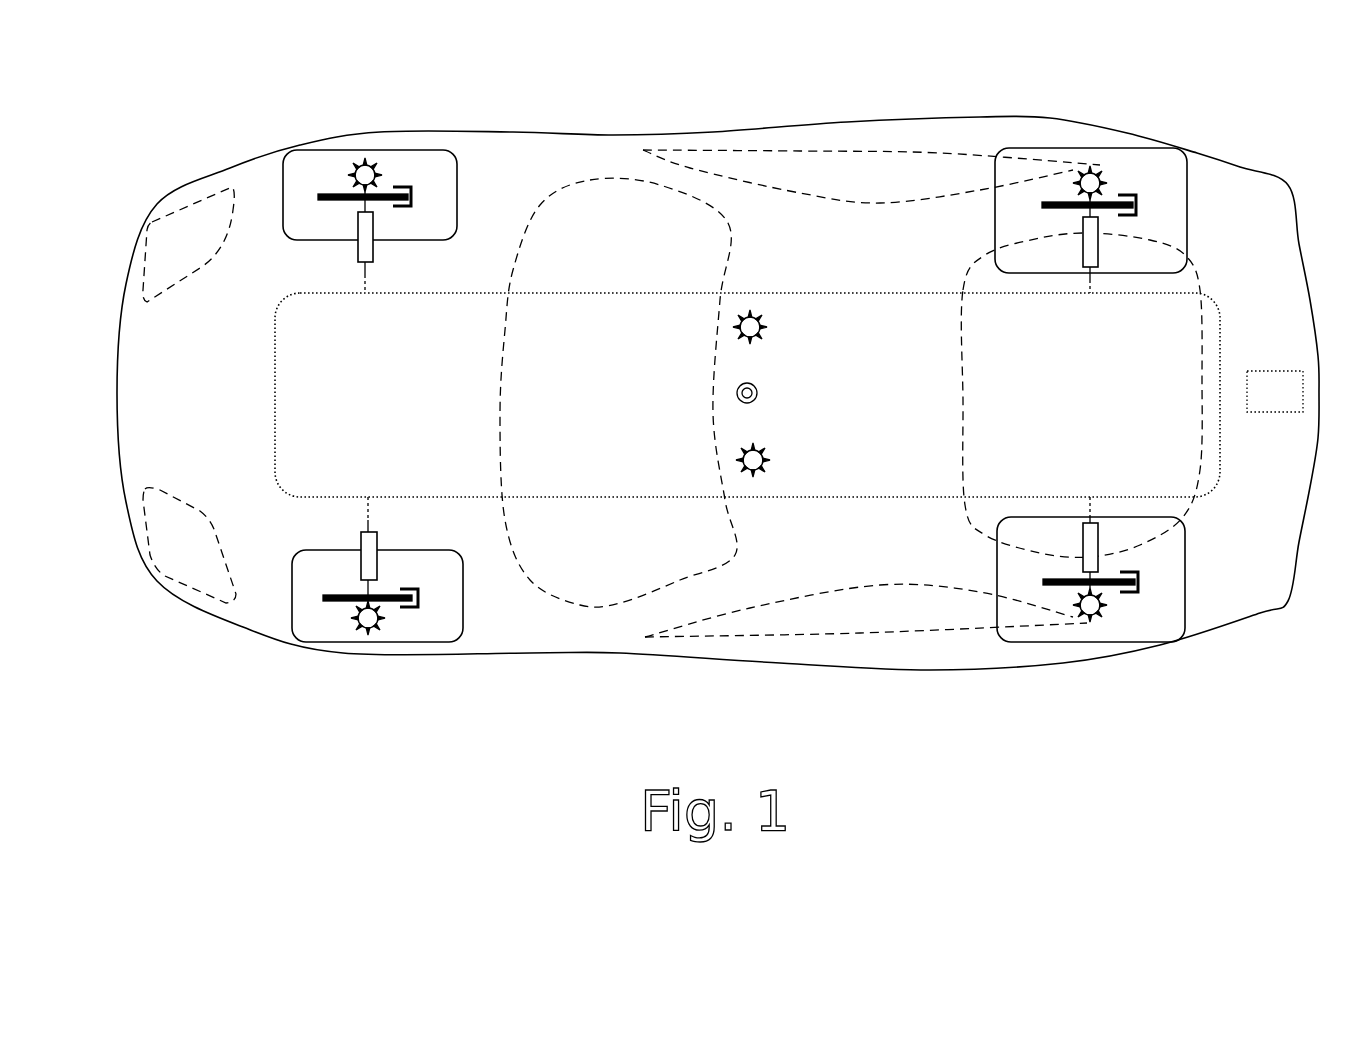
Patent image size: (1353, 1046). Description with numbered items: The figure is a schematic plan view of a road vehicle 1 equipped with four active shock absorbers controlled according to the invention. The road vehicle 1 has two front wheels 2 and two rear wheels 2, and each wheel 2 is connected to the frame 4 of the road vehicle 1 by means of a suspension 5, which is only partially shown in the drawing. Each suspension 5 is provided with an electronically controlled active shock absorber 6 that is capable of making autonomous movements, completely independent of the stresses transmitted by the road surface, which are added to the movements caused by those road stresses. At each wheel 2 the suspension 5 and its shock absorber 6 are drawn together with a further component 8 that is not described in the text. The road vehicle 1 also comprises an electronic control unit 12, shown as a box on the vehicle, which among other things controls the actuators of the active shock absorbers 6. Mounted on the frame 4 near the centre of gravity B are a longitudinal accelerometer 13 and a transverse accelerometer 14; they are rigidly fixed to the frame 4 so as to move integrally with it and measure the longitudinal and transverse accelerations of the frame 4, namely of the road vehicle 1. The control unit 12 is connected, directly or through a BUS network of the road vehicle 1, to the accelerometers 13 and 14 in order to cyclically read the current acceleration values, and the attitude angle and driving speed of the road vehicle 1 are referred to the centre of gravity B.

The road vehicle 1 is at (1205, 765).
The wheels 2 is at (430, 165).
The frame 4 is at (822, 498).
The suspension 5 is at (413, 215).
The active shock absorber 6 is at (362, 240).
The electric motor 8 is at (360, 163).
The electronic control unit 12 is at (1275, 391).
The longitudinal accelerometer 13 is at (762, 328).
The transverse accelerometer 14 is at (765, 458).
The centre of gravity B is at (738, 392).